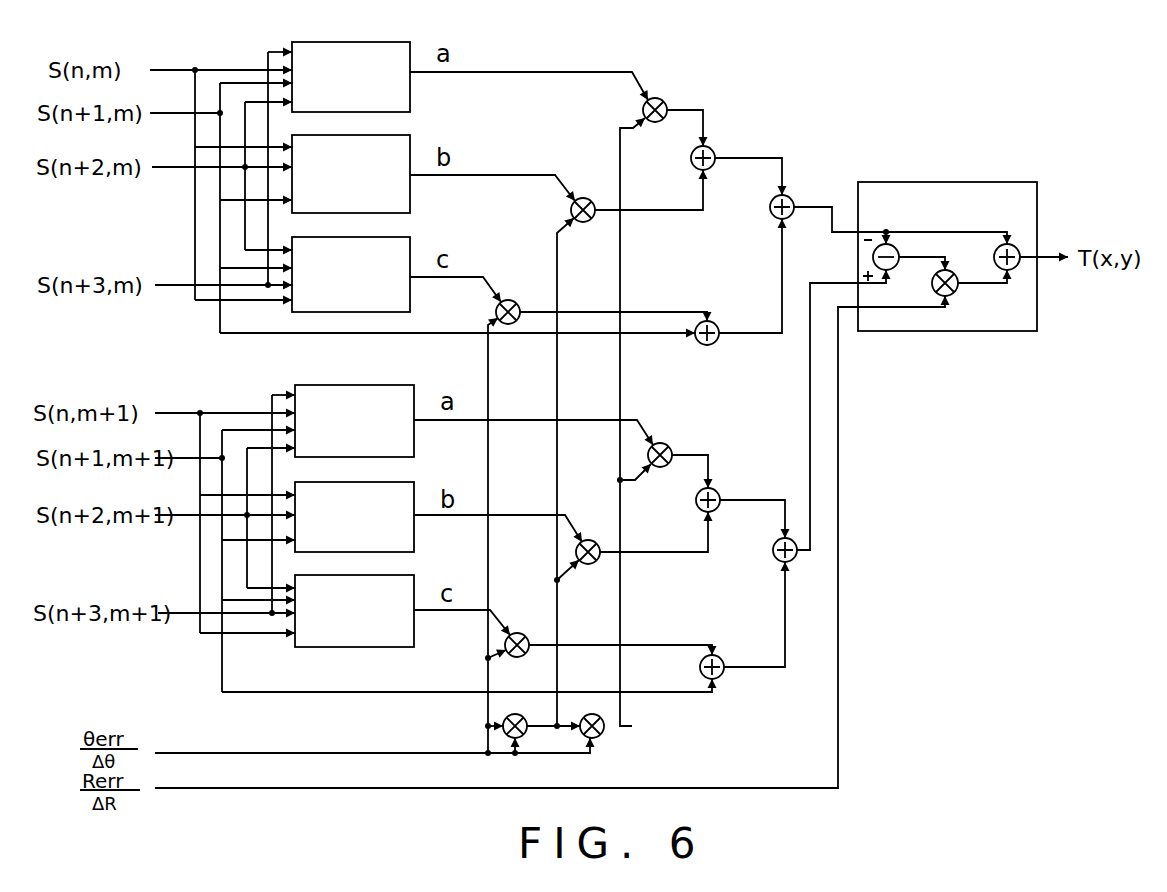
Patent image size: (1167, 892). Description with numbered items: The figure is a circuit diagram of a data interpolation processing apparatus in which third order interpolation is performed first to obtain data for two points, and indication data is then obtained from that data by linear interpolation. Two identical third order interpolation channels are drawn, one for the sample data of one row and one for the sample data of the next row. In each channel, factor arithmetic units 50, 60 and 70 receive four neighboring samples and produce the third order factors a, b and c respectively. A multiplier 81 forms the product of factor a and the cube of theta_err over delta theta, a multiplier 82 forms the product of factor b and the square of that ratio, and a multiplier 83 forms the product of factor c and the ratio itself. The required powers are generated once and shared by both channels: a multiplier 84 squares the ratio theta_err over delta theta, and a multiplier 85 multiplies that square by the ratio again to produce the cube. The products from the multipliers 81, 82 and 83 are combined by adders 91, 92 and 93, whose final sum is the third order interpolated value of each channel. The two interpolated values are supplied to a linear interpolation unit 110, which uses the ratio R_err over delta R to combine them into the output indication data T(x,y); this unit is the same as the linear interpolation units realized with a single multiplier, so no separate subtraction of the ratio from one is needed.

The factor arithmetic unit 50 is at (396, 42).
The factor arithmetic unit 60 is at (394, 137).
The factor arithmetic unit 70 is at (394, 239).
The multiplier 81 is at (664, 101).
The multiplier 82 is at (589, 199).
The multiplier 83 is at (515, 301).
The multiplier 84 is at (497, 726).
The multiplier 85 is at (601, 735).
The adder 91 is at (714, 150).
The adder 92 is at (716, 323).
The adder 93 is at (792, 199).
The linear interpolation unit 110 is at (1000, 182).